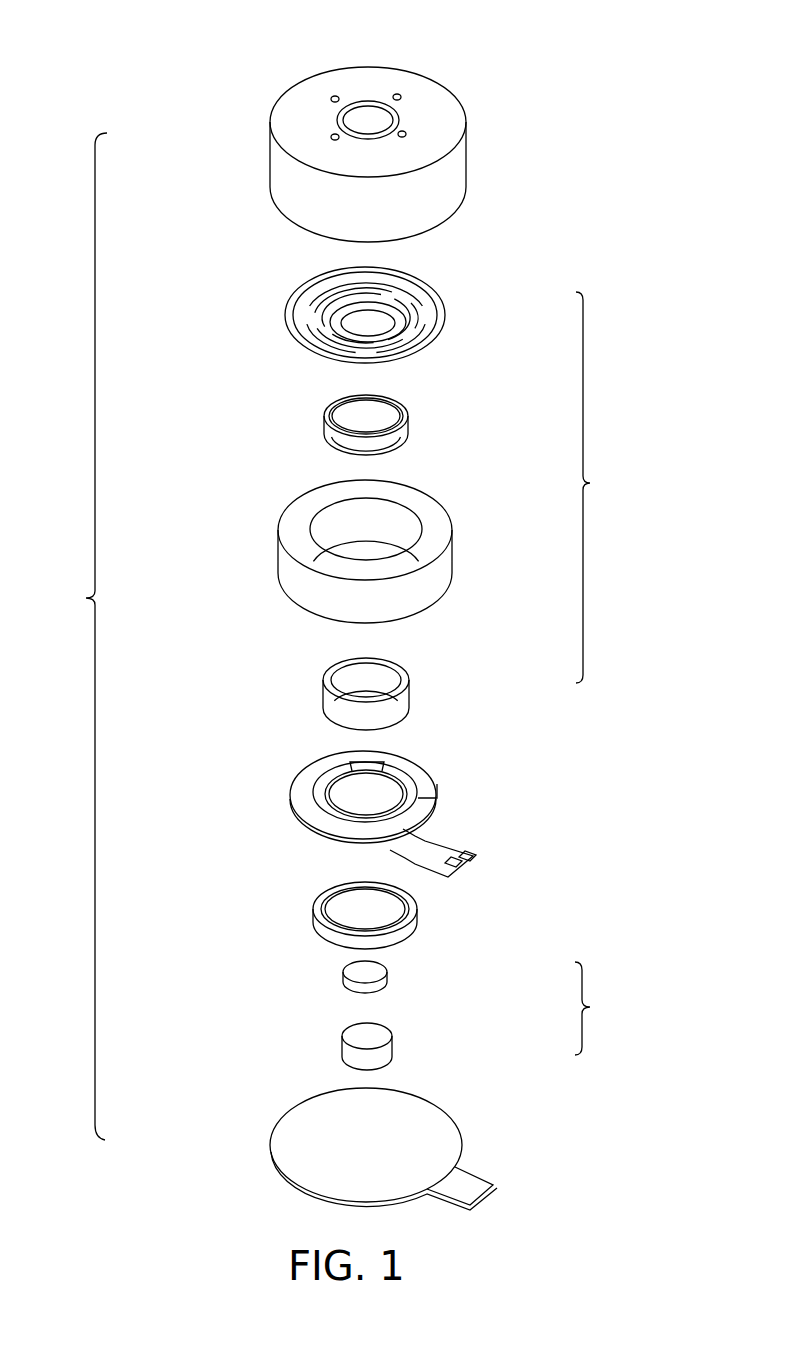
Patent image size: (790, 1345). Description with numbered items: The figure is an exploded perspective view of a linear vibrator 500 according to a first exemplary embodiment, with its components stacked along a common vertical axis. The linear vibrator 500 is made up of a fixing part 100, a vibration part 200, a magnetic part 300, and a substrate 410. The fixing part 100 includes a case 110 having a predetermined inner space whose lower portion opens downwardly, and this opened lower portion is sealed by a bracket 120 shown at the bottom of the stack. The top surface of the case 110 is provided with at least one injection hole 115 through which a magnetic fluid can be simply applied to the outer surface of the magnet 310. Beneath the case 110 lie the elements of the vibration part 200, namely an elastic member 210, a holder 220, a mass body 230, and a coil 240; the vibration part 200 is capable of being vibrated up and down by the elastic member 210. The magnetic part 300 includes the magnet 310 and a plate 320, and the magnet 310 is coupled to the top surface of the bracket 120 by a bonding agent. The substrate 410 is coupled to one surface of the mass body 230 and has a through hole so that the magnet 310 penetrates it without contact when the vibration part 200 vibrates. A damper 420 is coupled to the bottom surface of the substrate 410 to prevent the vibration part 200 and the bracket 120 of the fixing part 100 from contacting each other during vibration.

The linear vibrator 500 is at (618, 32).
The fixing part 100 is at (72, 636).
The case 110 is at (277, 155).
The injection hole 115 is at (401, 96).
The bracket 120 is at (275, 1143).
The vibration part 200 is at (609, 487).
The elastic member 210 is at (443, 305).
The holder 220 is at (408, 417).
The mass body 230 is at (450, 565).
The coil 240 is at (403, 700).
The magnetic part 300 is at (610, 1008).
The magnet 310 is at (380, 1057).
The plate 320 is at (378, 990).
The substrate 410 is at (443, 784).
The damper 420 is at (413, 920).